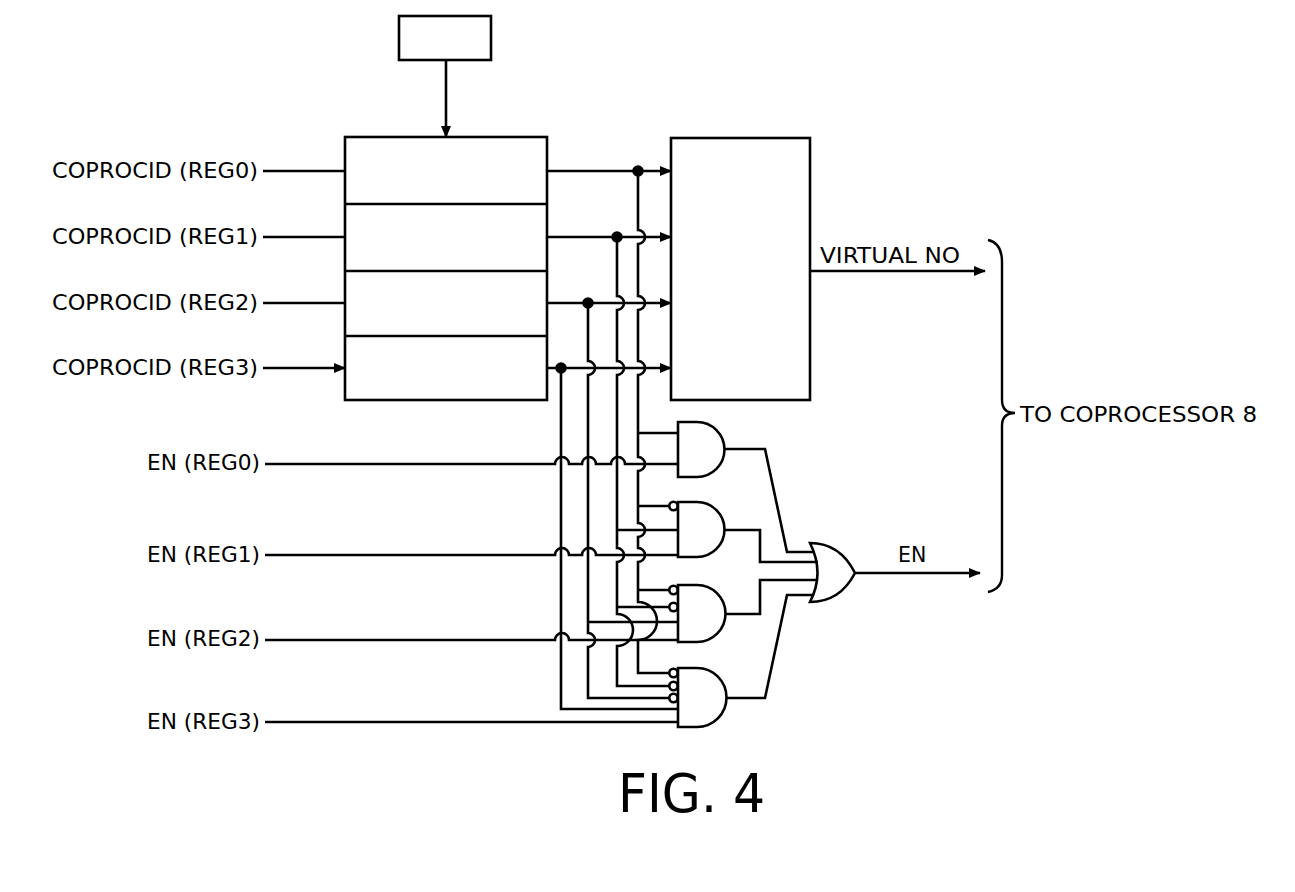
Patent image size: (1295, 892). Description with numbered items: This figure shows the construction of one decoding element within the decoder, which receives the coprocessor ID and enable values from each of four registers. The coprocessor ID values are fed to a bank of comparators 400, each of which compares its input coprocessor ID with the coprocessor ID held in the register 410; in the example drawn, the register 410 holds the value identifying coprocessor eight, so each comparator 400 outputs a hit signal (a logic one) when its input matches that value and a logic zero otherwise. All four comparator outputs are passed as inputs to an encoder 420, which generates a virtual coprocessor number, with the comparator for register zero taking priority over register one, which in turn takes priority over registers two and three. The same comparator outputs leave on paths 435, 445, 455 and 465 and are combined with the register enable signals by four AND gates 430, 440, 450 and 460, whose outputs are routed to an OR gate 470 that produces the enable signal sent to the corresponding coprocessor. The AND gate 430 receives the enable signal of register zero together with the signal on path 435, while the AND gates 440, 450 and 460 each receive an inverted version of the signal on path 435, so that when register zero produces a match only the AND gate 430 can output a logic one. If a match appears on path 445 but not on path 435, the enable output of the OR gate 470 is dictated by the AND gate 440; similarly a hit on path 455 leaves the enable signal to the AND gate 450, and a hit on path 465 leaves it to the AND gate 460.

The comparator 400 is at (511, 137).
The register 410 is at (399, 33).
The encoder 420 is at (745, 137).
The AND gate 430 is at (735, 483).
The AND gate 440 is at (735, 563).
The AND gate 450 is at (712, 639).
The AND gate 460 is at (735, 733).
The OR gate 470 is at (834, 543).
The path 435 is at (589, 171).
The path 445 is at (590, 237).
The path 455 is at (580, 303).
The path 465 is at (587, 373).